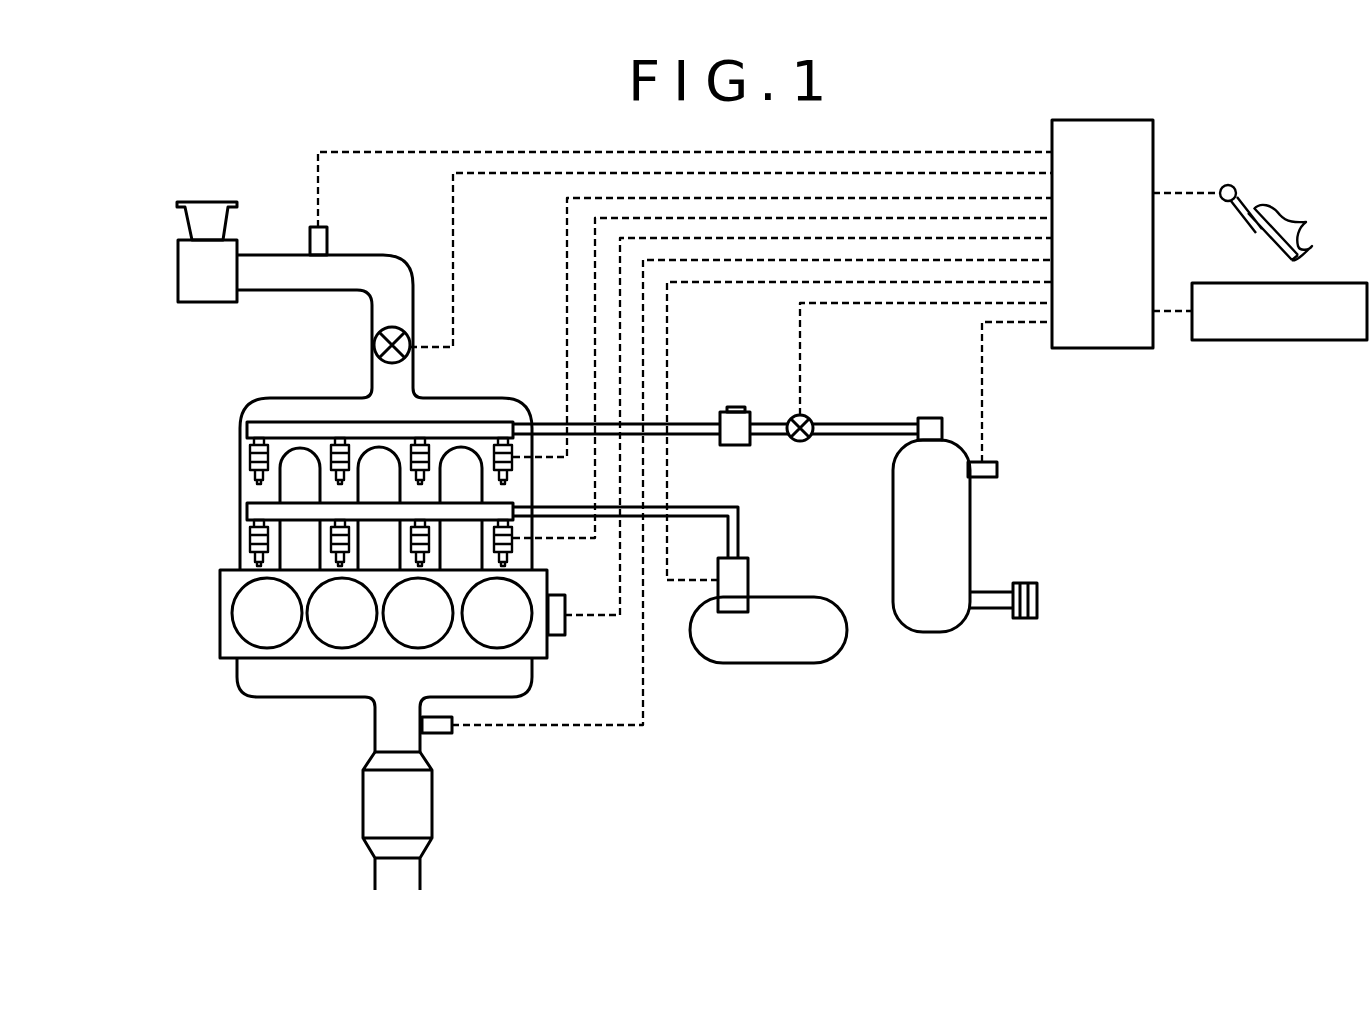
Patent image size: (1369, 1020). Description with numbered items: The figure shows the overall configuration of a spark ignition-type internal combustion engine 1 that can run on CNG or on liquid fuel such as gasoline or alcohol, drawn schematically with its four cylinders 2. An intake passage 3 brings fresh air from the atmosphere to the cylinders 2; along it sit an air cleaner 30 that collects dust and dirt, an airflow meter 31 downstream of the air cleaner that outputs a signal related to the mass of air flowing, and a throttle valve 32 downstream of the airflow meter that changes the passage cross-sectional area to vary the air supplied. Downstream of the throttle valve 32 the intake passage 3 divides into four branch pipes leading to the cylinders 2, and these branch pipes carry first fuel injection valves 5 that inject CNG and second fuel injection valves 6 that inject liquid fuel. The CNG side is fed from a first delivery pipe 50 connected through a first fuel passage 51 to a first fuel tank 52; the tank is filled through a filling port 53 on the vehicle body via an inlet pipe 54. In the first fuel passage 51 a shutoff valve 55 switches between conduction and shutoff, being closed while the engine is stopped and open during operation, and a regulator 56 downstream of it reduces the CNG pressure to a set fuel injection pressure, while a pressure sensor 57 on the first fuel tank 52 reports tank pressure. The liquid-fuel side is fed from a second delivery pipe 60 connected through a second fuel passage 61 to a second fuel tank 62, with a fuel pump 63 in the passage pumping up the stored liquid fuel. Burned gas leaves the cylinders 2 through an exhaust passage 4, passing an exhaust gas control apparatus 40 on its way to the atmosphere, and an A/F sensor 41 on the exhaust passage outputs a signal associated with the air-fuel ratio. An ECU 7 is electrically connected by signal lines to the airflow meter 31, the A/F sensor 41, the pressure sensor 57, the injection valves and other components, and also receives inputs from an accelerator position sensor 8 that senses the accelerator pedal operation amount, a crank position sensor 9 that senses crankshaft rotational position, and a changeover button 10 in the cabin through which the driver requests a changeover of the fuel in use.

The internal combustion engine 1 is at (207, 667).
The cylinders 2 is at (237, 613).
The intake passage 3 is at (378, 255).
The exhaust passage 4 is at (377, 727).
The first fuel injection valves 5 is at (247, 450).
The second fuel injection valves 6 is at (247, 535).
The ECU 7 is at (1153, 137).
The accelerator position sensor 8 is at (1237, 185).
The crank position sensor 9 is at (565, 636).
The changeover button 10 is at (1250, 340).
The air cleaner 30 is at (180, 268).
The airflow meter 31 is at (316, 226).
The throttle valve 32 is at (374, 345).
The exhaust gas control apparatus 40 is at (367, 812).
The A/F sensor 41 is at (442, 733).
The first delivery pipe 50 is at (293, 424).
The first fuel passage 51 is at (688, 423).
The first fuel tank 52 is at (970, 545).
The filling port 53 is at (1037, 600).
The inlet pipe 54 is at (983, 608).
The shutoff valve 55 is at (809, 418).
The regulator 56 is at (745, 410).
The pressure sensor 57 is at (997, 462).
The second delivery pipe 60 is at (249, 508).
The second fuel passage 61 is at (740, 527).
The second fuel tank 62 is at (763, 663).
The fuel pump 63 is at (748, 572).